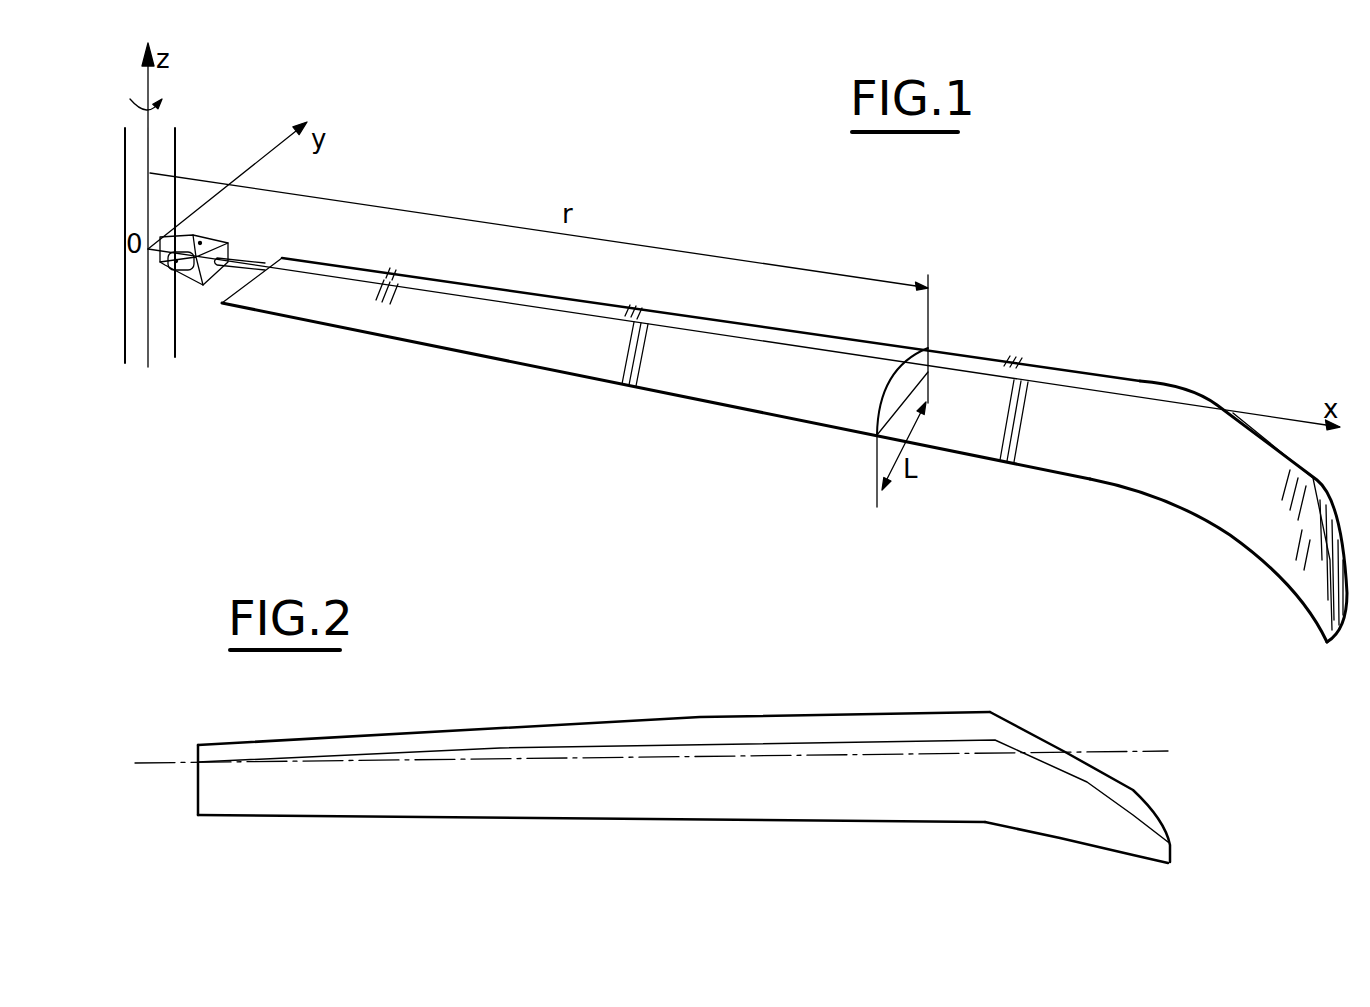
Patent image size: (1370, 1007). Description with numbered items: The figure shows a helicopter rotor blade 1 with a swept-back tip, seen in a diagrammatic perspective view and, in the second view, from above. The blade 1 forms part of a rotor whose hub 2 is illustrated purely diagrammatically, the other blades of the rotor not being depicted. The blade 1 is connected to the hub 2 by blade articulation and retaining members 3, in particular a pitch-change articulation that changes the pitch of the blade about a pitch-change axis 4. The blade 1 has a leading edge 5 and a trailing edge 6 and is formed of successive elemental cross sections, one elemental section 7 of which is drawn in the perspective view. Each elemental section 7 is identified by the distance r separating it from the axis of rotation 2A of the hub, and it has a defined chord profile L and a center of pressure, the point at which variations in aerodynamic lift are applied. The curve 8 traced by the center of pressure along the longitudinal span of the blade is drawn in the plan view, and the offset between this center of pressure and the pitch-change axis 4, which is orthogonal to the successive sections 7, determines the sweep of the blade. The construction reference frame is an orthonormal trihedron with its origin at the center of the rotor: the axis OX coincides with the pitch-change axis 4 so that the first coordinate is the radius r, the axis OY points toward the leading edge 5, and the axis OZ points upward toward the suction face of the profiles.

In FIG. 1, the blade 1 is at (1060, 329).
In FIG. 2, the blade 1 is at (687, 697).
In FIG. 1, the hub 2 is at (113, 328).
In FIG. 1, the axis of rotation 2A is at (148, 193).
In FIG. 1, the blade articulation and retaining members 3 is at (228, 225).
In FIG. 1, the pitch-change axis 4 is at (250, 263).
In FIG. 2, the pitch-change axis 4 is at (173, 763).
In FIG. 1, the leading edge 5 is at (658, 308).
In FIG. 2, the leading edge 5 is at (513, 730).
In FIG. 1, the trailing edge 6 is at (650, 390).
In FIG. 2, the trailing edge 6 is at (562, 820).
In FIG. 1, the elemental cross section 7 is at (865, 416).
In FIG. 2, the curve of the center of pressure 8 is at (890, 740).